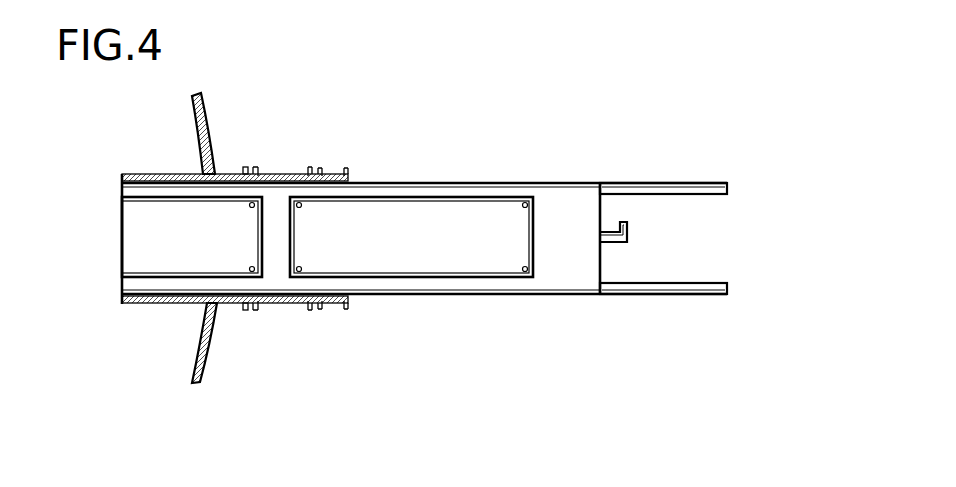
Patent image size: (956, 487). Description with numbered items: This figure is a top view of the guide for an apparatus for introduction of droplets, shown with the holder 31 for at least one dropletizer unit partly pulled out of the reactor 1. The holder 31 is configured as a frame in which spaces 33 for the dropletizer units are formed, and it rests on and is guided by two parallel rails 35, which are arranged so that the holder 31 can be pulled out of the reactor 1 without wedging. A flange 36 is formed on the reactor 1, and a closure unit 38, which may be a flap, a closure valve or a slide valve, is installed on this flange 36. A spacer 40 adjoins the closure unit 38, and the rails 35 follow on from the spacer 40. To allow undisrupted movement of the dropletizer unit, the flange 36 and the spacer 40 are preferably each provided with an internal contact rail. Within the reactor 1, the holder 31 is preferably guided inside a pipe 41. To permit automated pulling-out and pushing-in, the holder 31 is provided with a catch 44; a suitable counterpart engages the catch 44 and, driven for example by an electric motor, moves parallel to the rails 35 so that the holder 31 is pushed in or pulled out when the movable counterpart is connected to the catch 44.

The reactor 1 is at (207, 108).
The holder for at least one dropletizer unit 31 is at (563, 215).
The spaces for the dropletizer units 33 is at (232, 235).
The rails 35 is at (718, 190).
The flange 36 is at (225, 304).
The closure unit 38 is at (280, 168).
The spacer 40 is at (338, 168).
The pipe 41 is at (159, 172).
The catch 44 is at (611, 231).